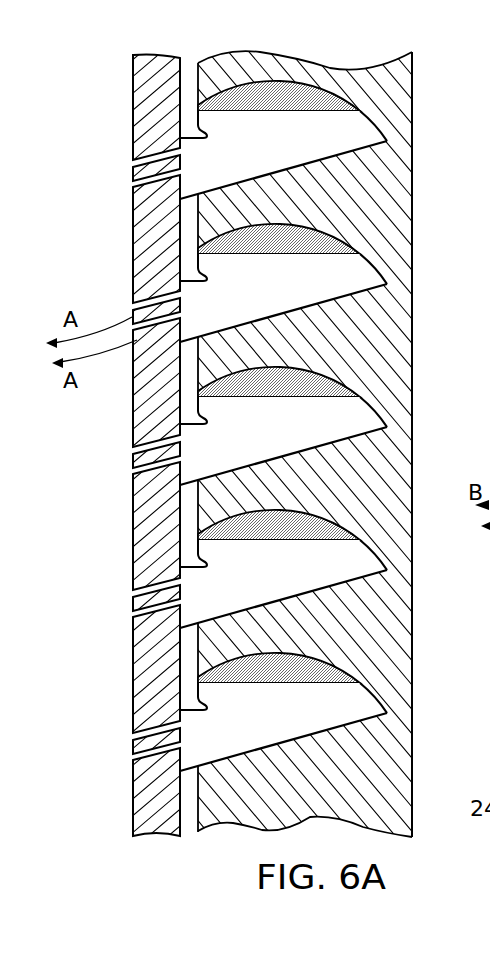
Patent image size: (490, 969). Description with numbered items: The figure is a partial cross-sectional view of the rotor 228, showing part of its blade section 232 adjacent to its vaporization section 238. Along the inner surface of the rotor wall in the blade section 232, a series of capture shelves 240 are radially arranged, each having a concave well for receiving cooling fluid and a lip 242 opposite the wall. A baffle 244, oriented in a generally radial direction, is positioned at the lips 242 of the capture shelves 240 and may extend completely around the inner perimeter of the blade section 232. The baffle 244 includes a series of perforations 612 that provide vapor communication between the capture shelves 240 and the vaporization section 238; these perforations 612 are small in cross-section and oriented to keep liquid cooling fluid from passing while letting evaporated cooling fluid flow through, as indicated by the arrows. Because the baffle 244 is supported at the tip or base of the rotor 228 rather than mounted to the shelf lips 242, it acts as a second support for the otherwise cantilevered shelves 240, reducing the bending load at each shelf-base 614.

The rotor 228 is at (438, 143).
The blade section 232 is at (412, 375).
The vaporization section 238 is at (66, 556).
The capture shelf 240 is at (215, 191).
The lip 242 is at (206, 280).
The baffle 244 is at (132, 713).
The perforations 612 is at (133, 175).
The shelf-base 614 is at (387, 570).